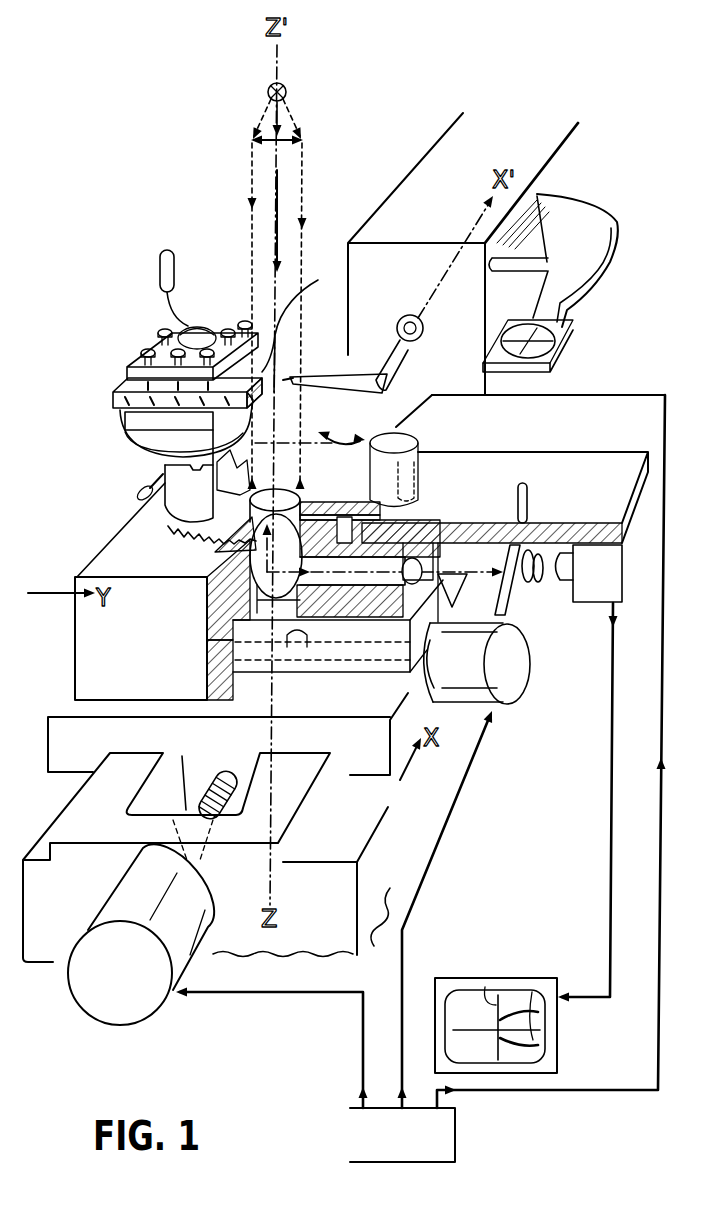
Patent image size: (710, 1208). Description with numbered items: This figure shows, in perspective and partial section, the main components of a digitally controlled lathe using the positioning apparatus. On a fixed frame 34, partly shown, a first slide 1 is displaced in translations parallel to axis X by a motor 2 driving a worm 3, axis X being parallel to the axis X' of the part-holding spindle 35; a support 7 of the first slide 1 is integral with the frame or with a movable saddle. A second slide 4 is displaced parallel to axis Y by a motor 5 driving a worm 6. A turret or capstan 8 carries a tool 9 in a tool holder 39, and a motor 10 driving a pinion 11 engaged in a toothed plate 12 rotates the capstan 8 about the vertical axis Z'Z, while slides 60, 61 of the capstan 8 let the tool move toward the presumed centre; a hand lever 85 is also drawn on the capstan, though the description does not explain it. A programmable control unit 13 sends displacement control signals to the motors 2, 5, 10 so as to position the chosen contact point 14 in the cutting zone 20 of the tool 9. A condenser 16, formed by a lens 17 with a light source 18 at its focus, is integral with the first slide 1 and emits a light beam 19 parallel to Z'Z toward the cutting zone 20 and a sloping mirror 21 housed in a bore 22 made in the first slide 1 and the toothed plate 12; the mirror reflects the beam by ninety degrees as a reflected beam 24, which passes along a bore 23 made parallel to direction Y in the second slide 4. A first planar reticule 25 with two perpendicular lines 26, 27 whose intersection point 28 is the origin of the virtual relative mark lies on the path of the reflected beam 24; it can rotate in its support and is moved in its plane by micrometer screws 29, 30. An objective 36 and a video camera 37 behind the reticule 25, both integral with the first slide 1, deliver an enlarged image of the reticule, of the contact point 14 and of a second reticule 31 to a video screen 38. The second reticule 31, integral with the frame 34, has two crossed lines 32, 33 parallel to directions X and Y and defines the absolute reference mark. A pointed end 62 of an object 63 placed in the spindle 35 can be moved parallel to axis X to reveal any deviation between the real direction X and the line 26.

The first slide 1 is at (58, 748).
The motor 2 is at (143, 980).
The worm 3 is at (210, 777).
The second slide 4 is at (93, 652).
The motor 5 is at (510, 693).
The worm 6 is at (270, 674).
The support 7 is at (47, 955).
The turret or capstan 8 is at (100, 434).
The tool 9 is at (118, 395).
The motor 10 is at (408, 414).
The pinion 11 is at (420, 463).
The toothed plate 12 is at (185, 495).
The programmable control unit 13 is at (437, 1133).
The contact point 14 is at (290, 385).
The condenser 16 is at (252, 101).
The lens 17 is at (268, 152).
The light source 18 is at (287, 86).
The light beam 19 is at (252, 232).
The tool cutting zone 20 is at (283, 316).
The sloping mirror 21 is at (207, 652).
The bore 22 is at (216, 598).
The bore 23 is at (337, 503).
The reflected light beam 24 is at (352, 662).
The first planar reticule 25 is at (512, 546).
The reticule line 26 is at (540, 556).
The reticule line 27 is at (541, 592).
The intersection point 28 is at (490, 1020).
The micrometer screw 29 is at (523, 486).
The micrometer screw 30 is at (512, 640).
The second reticule 31 is at (547, 371).
The crossed line 32 is at (550, 340).
The crossed line 33 is at (597, 285).
The fixed frame 34 is at (422, 150).
The part-holding spindle 35 is at (423, 326).
The objective 36 is at (440, 628).
The video camera 37 is at (617, 581).
The video screen 38 is at (427, 1013).
The tool holder 39 is at (140, 363).
The slide 60 is at (150, 488).
The slide 61 is at (212, 548).
The pointed end 62 is at (283, 373).
The object 63 is at (388, 345).
The handle 85 is at (157, 262).